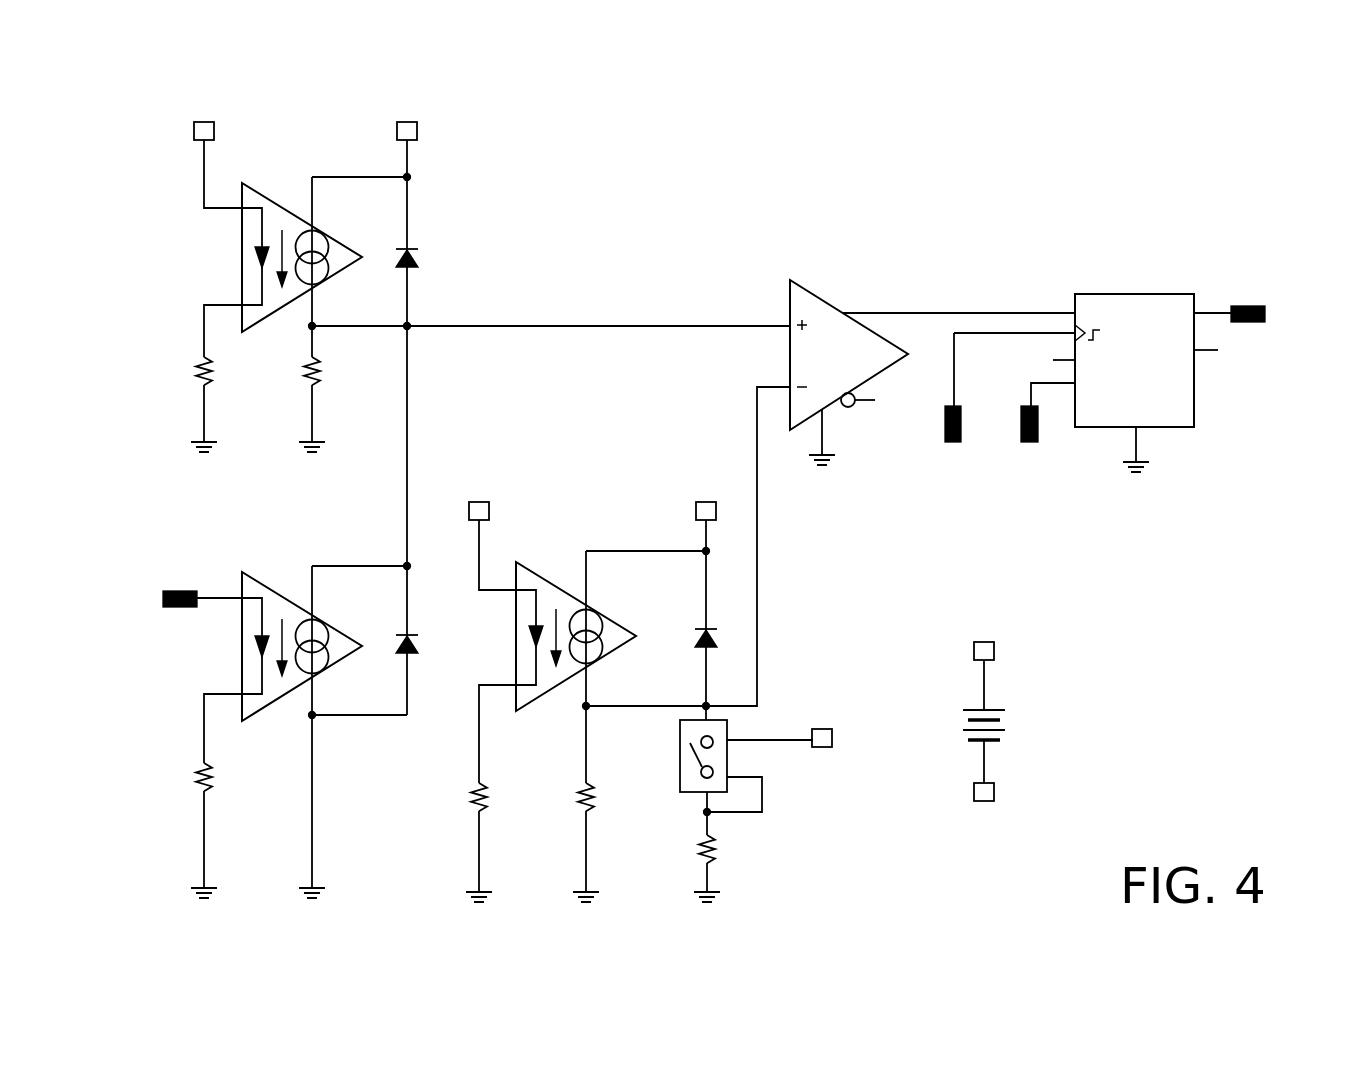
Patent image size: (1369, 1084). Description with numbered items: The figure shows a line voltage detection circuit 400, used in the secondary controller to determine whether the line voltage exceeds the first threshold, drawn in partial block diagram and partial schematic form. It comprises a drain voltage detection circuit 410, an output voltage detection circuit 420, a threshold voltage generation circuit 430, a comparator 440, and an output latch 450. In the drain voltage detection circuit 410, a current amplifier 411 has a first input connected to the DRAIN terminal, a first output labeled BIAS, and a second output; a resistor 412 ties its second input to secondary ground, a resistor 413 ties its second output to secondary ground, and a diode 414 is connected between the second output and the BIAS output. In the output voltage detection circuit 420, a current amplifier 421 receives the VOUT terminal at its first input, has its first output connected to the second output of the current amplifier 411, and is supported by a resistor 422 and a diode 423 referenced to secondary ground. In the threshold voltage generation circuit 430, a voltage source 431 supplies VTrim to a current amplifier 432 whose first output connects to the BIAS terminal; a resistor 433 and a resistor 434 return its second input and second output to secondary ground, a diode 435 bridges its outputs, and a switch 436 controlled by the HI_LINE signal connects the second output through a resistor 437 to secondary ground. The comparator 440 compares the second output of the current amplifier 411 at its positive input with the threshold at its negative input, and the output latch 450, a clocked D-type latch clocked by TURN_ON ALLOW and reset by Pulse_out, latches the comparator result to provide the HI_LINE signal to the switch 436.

The line voltage detection circuit 400 is at (757, 126).
The drain voltage detection circuit 410 is at (118, 181).
The current amplifier 411 is at (258, 188).
The resistor 412 is at (192, 376).
The resistor 413 is at (300, 372).
The diode 414 is at (418, 258).
The output voltage detection circuit 420 is at (123, 566).
The current amplifier 421 is at (258, 578).
The resistor 422 is at (190, 782).
The diode 423 is at (420, 647).
The threshold voltage generation circuit 430 is at (538, 470).
The voltage source 431 is at (997, 707).
The current amplifier 432 is at (532, 570).
The resistor 433 is at (462, 800).
The resistor 434 is at (572, 800).
The diode 435 is at (692, 640).
The switch 436 is at (675, 742).
The resistor 437 is at (692, 845).
The comparator 440 is at (818, 294).
The output latch 450 is at (1113, 294).